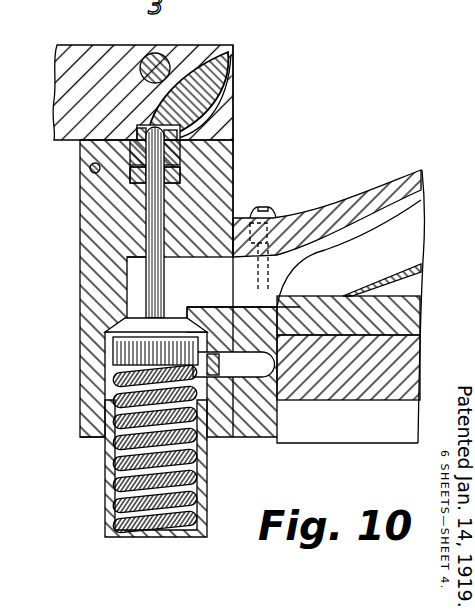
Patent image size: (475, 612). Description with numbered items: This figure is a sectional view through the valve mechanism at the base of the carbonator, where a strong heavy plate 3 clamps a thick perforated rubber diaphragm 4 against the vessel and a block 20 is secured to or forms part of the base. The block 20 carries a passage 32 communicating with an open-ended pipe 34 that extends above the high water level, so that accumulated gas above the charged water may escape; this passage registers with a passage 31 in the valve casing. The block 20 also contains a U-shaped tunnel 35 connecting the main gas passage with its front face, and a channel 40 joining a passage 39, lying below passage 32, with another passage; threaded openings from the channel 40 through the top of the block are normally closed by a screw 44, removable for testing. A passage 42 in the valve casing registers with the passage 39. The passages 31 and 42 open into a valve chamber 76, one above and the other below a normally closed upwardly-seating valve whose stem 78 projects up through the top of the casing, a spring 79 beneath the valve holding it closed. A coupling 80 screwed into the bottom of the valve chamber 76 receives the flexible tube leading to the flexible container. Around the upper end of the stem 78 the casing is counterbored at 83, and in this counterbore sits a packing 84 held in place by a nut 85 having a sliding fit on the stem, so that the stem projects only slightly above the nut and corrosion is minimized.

The plate 3 is at (362, 377).
The rubber diaphragm 4 is at (377, 292).
The block 20 is at (280, 440).
The passage 31 is at (235, 215).
The passage 32 is at (280, 253).
The open-ended pipe 34 is at (372, 203).
The U-shaped tunnel 35 is at (52, 389).
The passage 39 is at (250, 425).
The channel 40 is at (443, 351).
The passage 42 is at (127, 367).
The screw 44 is at (130, 347).
The valve chamber 76 is at (135, 285).
The stem 78 is at (157, 202).
The spring 79 is at (107, 498).
The coupling 80 is at (112, 452).
The counterbore 83 is at (183, 175).
The packing 84 is at (178, 133).
The nut 85 is at (197, 110).